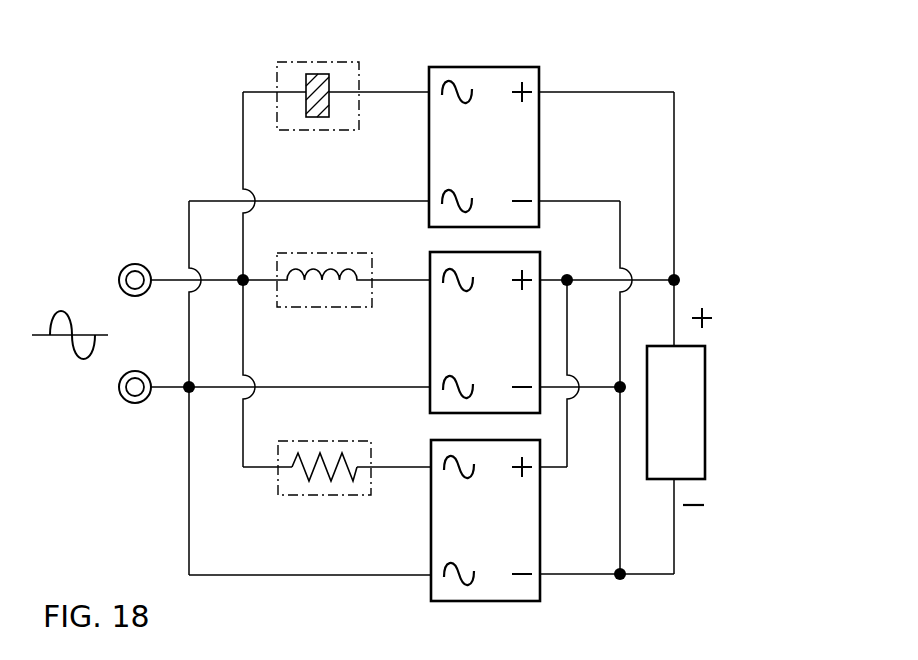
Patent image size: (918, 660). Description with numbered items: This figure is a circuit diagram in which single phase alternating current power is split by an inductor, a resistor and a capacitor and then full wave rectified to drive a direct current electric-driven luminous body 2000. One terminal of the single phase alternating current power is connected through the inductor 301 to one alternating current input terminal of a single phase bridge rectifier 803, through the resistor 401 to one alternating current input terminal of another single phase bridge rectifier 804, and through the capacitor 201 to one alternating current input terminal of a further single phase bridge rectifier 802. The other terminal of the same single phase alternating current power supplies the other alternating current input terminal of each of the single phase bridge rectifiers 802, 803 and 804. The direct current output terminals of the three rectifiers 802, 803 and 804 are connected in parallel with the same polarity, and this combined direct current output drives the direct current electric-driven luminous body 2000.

The capacitor 201 is at (297, 61).
The inductor 301 is at (296, 253).
The resistor 401 is at (315, 440).
The single phase bridge rectifier 802 is at (429, 185).
The single phase bridge rectifier 803 is at (430, 372).
The single phase bridge rectifier 804 is at (431, 558).
The direct current electric-driven luminous body 2000 is at (707, 425).